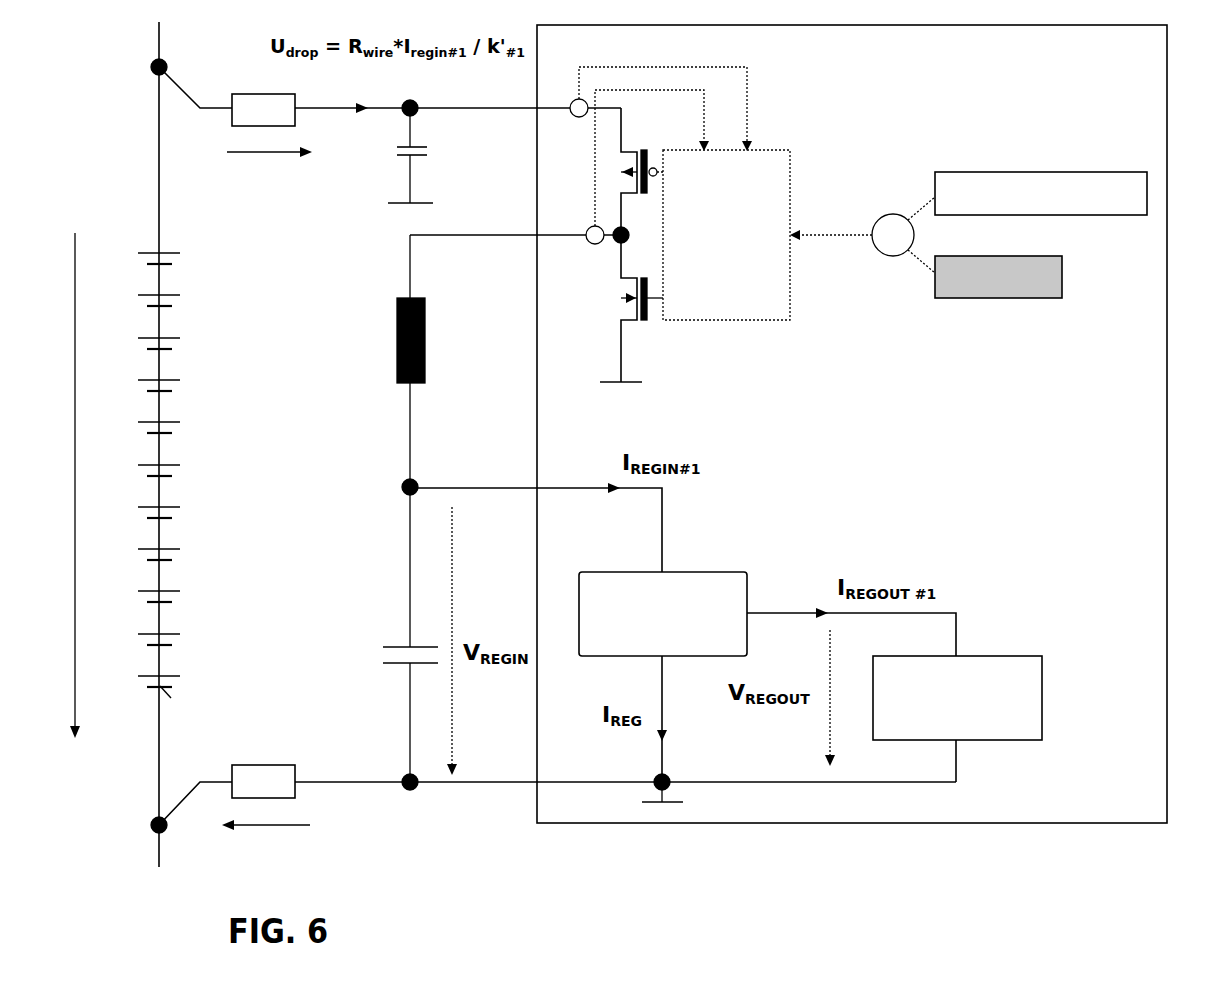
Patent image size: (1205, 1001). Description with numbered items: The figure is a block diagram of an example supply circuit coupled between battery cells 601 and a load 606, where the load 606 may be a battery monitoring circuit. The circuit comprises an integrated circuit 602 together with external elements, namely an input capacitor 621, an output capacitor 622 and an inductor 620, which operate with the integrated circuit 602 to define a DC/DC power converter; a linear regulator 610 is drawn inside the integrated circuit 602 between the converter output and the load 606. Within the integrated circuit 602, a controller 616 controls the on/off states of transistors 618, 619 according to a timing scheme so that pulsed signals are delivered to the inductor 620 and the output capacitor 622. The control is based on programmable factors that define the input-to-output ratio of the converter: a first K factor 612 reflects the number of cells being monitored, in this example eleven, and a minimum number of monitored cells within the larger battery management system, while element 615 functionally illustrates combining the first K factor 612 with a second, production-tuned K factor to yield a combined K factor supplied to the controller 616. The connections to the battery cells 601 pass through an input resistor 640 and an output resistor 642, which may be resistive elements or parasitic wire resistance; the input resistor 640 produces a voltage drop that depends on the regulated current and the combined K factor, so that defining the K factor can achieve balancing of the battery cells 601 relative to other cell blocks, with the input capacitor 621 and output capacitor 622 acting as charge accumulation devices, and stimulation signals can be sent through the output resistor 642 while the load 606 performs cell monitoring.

The battery cells 601 is at (196, 416).
The integrated circuit 602 is at (852, 424).
The load 606 is at (1043, 688).
The linear regulator 610 is at (712, 572).
The first K factor 612 is at (1002, 170).
The combination element 615 is at (900, 215).
The controller 616 is at (730, 322).
The transistor 618 is at (622, 192).
The transistor 619 is at (622, 318).
The inductor 620 is at (397, 298).
The input capacitor 621 is at (398, 158).
The output capacitor 622 is at (393, 647).
The input resistor 640 is at (247, 93).
The output resistor 642 is at (290, 765).